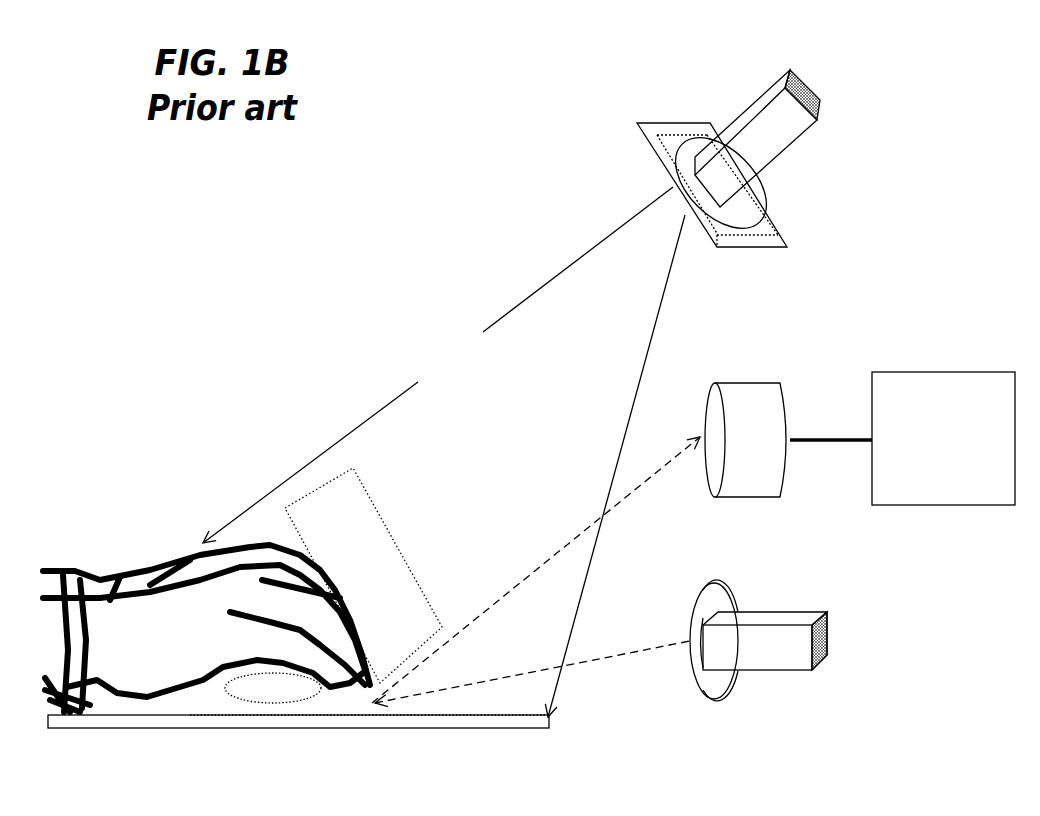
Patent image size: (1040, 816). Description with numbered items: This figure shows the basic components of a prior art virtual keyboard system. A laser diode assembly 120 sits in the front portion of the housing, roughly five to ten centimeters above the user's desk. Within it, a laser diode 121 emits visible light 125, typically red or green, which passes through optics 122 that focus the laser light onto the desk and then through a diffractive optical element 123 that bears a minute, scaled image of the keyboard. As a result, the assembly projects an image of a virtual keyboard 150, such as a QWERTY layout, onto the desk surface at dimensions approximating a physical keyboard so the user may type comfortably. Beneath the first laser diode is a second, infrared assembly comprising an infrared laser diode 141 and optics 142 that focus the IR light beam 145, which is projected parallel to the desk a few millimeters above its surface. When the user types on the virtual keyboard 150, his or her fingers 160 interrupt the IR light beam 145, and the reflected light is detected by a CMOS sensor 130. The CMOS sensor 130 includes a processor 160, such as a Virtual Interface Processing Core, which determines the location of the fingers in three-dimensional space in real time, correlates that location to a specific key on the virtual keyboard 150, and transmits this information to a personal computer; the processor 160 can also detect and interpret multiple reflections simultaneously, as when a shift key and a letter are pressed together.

The laser diode assembly 120 is at (748, 132).
The laser diode 121 is at (825, 80).
The optics 122 is at (767, 197).
The diffractive optical element 123 is at (792, 252).
The visible light 125 is at (474, 372).
The CMOS sensor 130 is at (779, 452).
The infrared laser diode 141 is at (833, 618).
The optics 142 is at (740, 687).
The IR light beam 145 is at (516, 625).
The virtual keyboard 150 is at (470, 742).
The processor 160 is at (967, 454).